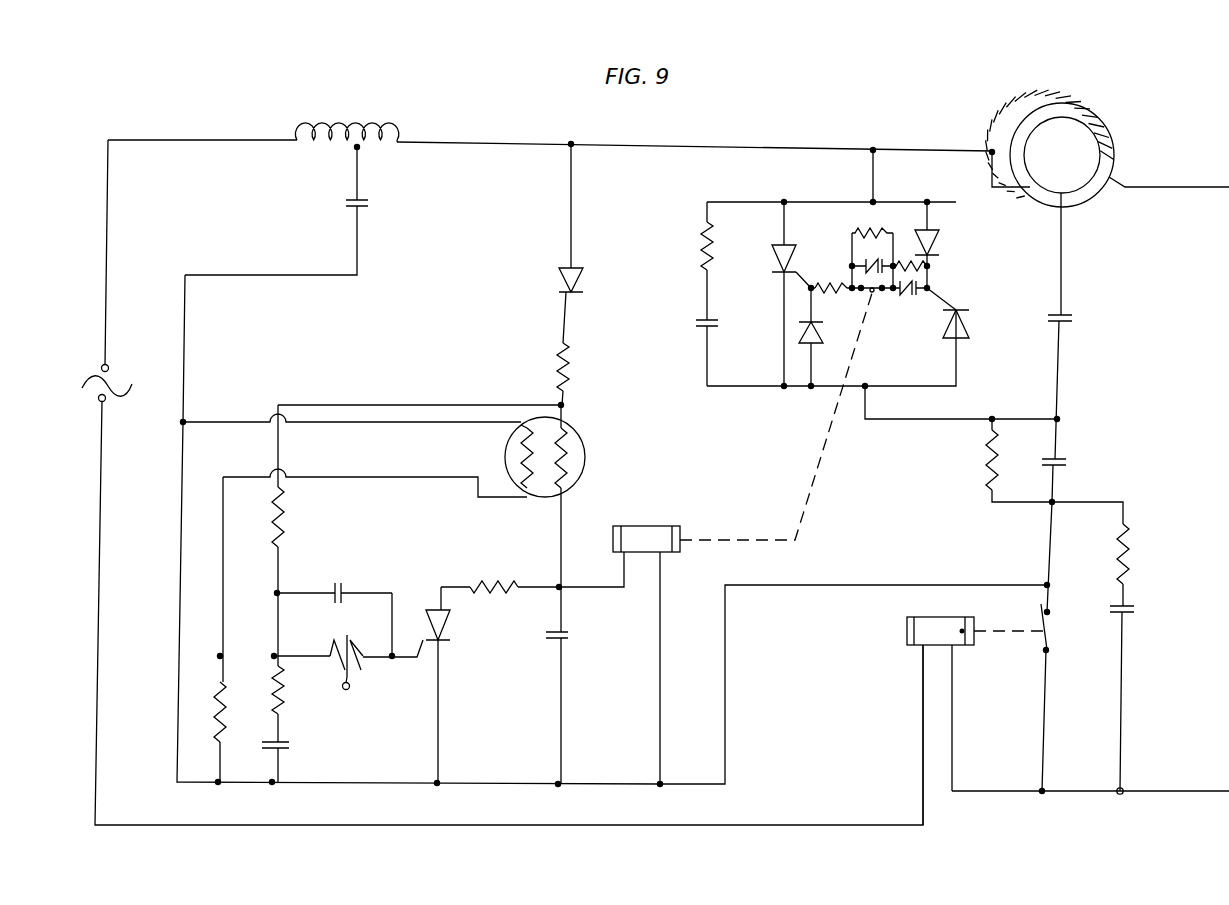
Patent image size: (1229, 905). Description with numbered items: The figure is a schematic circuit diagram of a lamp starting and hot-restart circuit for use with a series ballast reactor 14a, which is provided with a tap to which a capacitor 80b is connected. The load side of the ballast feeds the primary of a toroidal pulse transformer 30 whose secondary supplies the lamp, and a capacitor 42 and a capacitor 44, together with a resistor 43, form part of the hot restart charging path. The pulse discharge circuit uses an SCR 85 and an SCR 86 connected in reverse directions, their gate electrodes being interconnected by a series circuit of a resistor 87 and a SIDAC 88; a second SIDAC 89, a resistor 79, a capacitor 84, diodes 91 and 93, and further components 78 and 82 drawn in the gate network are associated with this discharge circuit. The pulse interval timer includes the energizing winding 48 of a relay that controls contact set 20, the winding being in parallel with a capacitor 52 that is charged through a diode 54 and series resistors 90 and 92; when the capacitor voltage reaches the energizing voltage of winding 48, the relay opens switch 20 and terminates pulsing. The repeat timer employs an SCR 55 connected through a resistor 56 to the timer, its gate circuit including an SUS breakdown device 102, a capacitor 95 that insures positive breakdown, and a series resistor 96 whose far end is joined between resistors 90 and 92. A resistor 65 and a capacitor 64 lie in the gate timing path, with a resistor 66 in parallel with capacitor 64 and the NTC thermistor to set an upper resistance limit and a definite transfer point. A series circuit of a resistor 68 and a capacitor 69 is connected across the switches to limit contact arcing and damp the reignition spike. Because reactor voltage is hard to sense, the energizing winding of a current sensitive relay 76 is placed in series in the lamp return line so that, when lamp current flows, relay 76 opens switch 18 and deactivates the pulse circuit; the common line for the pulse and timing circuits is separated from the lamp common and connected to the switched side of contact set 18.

The series ballast reactor 14a is at (384, 132).
The capacitor 80b is at (368, 202).
The pulse transformer 30 is at (1126, 114).
The semiconductor diode 54 is at (556, 282).
The resistor 90 is at (568, 372).
The resistor 92 is at (575, 446).
The series resistor 96 is at (286, 527).
The capacitor 95 is at (338, 592).
The SUS breakdown device 102 is at (360, 682).
The SCR 55 is at (452, 622).
The resistor 56 is at (490, 580).
The capacitor 52 is at (570, 637).
The resistor 66 is at (226, 702).
The resistor 65 is at (281, 704).
The capacitor 64 is at (281, 748).
The energizing winding 48 is at (619, 525).
The resistor 79 is at (702, 250).
The capacitor 84 is at (702, 320).
The SCR 85 is at (780, 252).
The diode 91 is at (798, 336).
The resistor 87 is at (840, 298).
The resistor 78 is at (862, 233).
The SIDAC 89 is at (856, 266).
The resistor 82 is at (893, 262).
The SIDAC 88 is at (904, 300).
The diode 93 is at (940, 250).
The SCR 86 is at (962, 332).
The switch 20 is at (878, 304).
The capacitor 42 is at (1072, 316).
The resistor 43 is at (984, 445).
The capacitor 44 is at (1062, 458).
The resistor 68 is at (1129, 555).
The capacitor 69 is at (1132, 604).
The switch 18 is at (1050, 627).
The current sensitive relay 76 is at (904, 631).